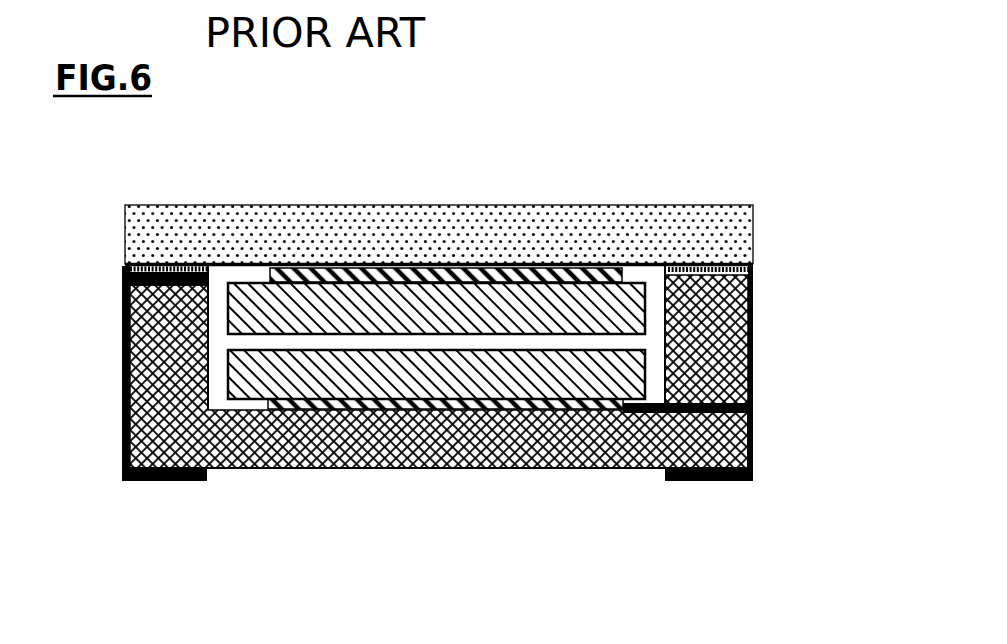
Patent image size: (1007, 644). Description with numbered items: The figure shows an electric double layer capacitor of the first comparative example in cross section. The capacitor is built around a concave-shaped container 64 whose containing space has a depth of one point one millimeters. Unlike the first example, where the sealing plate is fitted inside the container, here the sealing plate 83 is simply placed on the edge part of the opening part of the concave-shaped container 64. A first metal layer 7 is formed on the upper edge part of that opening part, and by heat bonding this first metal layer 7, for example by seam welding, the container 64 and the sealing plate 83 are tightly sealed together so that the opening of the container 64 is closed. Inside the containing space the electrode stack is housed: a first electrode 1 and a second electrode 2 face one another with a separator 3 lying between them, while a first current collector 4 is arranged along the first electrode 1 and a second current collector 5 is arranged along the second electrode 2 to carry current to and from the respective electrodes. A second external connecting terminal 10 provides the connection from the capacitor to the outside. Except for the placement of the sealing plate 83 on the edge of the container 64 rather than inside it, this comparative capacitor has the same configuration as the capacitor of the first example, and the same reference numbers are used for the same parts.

The first electrode 1 is at (236, 321).
The second electrode 2 is at (236, 378).
The separator 3 is at (648, 343).
The first current collector 4 is at (297, 268).
The second current collector 5 is at (278, 470).
The first metal layer 7 is at (125, 268).
The second external connecting terminal 10 is at (753, 447).
The concave-shaped container 64 is at (180, 429).
The sealing plate 83 is at (463, 232).